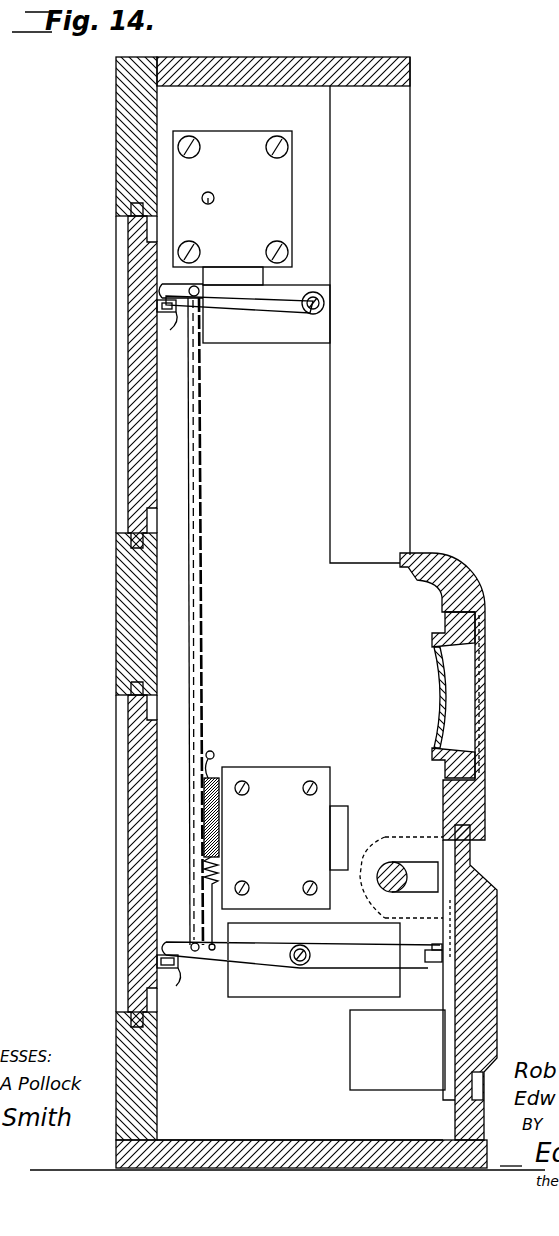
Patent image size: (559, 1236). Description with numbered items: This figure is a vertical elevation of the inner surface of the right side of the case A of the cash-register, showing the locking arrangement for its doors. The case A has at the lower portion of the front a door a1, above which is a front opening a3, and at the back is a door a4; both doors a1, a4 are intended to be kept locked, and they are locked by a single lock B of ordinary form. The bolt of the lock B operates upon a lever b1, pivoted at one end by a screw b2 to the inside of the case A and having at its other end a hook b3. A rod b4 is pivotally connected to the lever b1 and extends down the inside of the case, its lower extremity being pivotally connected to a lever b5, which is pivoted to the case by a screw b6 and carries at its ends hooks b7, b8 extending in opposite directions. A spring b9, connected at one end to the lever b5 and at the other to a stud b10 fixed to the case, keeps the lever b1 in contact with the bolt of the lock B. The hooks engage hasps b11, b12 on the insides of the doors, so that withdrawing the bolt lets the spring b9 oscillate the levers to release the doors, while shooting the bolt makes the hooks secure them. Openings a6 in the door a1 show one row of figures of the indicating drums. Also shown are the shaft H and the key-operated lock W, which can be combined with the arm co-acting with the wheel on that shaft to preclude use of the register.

The case A is at (261, 432).
The lock B is at (246, 130).
The lock W is at (285, 838).
The shaft H is at (401, 877).
The door a1 is at (484, 808).
The front opening a3 is at (397, 293).
The door a4 is at (124, 503).
The openings a6 is at (470, 701).
The lever b1 is at (240, 308).
The screw b2 is at (308, 314).
The hook b3 is at (160, 292).
The rod b4 is at (200, 558).
The lever b5 is at (220, 970).
The screw b6 is at (312, 958).
The hook b7 is at (170, 944).
The hook b8 is at (432, 970).
The spring b9 is at (220, 826).
The stud b10 is at (215, 754).
The hasp b11 is at (430, 949).
The hasp b12 is at (171, 652).